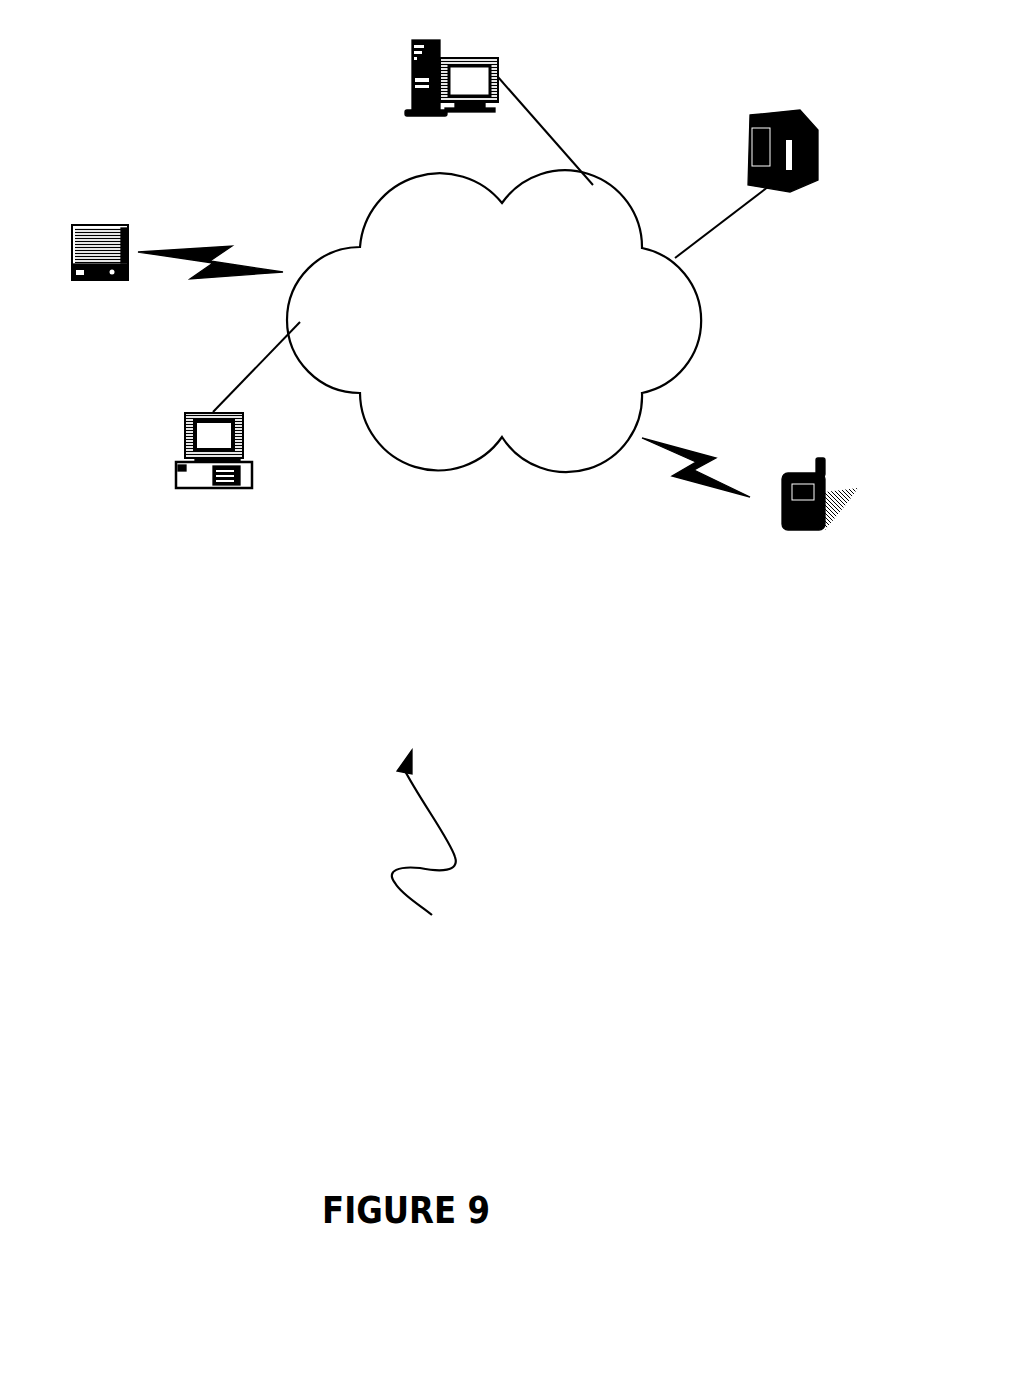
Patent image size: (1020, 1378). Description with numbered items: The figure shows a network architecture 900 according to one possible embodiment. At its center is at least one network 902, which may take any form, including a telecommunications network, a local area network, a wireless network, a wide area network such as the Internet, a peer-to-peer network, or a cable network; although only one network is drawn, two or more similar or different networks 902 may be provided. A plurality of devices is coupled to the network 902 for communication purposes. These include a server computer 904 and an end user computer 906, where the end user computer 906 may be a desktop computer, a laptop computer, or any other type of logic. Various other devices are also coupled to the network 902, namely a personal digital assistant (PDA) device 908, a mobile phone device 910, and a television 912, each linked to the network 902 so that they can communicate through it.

The network architecture 900 is at (429, 851).
The network 902 is at (560, 472).
The server computer 904 is at (412, 80).
The end user computer 906 is at (176, 467).
The personal digital assistant (PDA) device 908 is at (98, 227).
The mobile phone device 910 is at (783, 473).
The television 912 is at (753, 113).